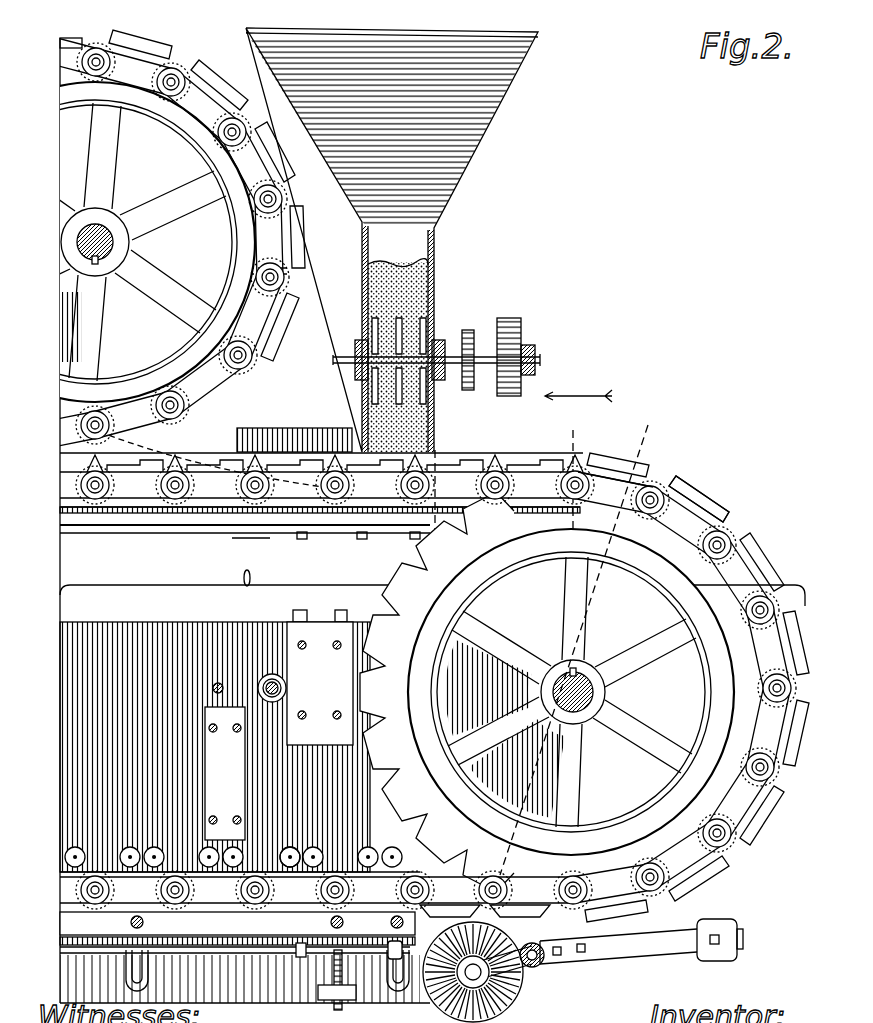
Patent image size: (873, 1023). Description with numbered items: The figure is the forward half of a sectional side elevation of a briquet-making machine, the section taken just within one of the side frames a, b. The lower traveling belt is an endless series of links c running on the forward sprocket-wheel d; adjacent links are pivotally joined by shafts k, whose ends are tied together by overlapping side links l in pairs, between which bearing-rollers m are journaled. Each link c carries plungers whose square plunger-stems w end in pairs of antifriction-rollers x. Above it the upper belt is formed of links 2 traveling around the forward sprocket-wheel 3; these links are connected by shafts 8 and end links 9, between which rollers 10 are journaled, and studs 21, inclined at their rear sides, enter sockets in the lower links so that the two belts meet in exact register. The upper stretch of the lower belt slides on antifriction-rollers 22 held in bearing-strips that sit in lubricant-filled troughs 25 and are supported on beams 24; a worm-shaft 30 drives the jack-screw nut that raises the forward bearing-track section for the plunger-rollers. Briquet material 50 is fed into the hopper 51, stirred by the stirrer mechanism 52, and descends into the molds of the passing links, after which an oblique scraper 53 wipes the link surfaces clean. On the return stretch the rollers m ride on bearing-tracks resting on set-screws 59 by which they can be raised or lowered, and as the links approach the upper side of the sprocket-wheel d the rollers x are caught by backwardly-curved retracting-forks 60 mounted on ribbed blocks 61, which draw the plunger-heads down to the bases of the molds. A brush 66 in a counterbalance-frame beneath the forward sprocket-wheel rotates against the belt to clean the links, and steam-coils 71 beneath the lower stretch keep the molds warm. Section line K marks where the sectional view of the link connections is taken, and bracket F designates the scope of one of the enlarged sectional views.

The link of upper belt 2 is at (284, 197).
The forward sprocket-wheel of upper belt 3 is at (163, 193).
The shaft 8 is at (240, 130).
The end link 9 is at (207, 103).
The roller 10 is at (173, 72).
The stud 21 is at (279, 337).
The antifriction-roller 22 is at (360, 508).
The beam 24 is at (240, 747).
The trough 25 is at (160, 520).
The worm-shaft 30 is at (268, 684).
The material 50 is at (436, 275).
The hopper 51 is at (488, 88).
The stirrer mechanism 52 is at (430, 318).
The oblique scraper 53 is at (262, 430).
The set-screw 59 is at (367, 986).
The retracting-fork 60 is at (585, 639).
The ribbed block 61 is at (605, 588).
The brush 66 is at (525, 990).
The steam-coil 71 is at (258, 950).
The section line K is at (578, 383).
The bracket F is at (251, 562).
The side frame a is at (600, 572).
The side frame b is at (545, 793).
The link of lower belt c is at (495, 462).
The forward sprocket-wheel of lower belt d is at (640, 702).
The shaft k is at (583, 470).
The side link l is at (688, 518).
The bearing-roller m is at (510, 468).
The plunger-stem w is at (233, 862).
The antifriction-roller x is at (293, 866).